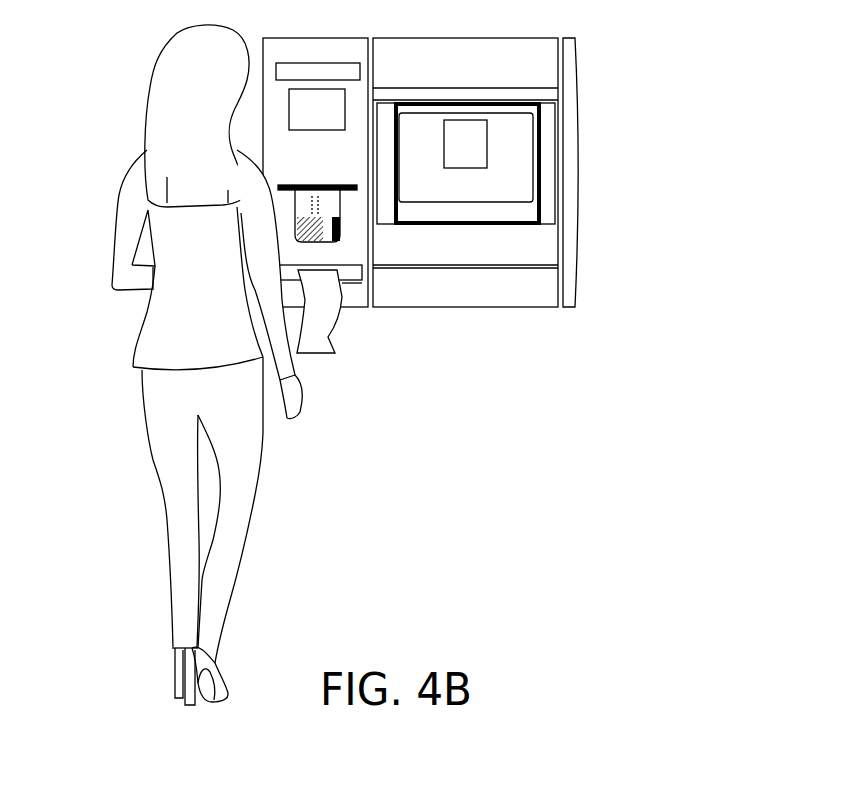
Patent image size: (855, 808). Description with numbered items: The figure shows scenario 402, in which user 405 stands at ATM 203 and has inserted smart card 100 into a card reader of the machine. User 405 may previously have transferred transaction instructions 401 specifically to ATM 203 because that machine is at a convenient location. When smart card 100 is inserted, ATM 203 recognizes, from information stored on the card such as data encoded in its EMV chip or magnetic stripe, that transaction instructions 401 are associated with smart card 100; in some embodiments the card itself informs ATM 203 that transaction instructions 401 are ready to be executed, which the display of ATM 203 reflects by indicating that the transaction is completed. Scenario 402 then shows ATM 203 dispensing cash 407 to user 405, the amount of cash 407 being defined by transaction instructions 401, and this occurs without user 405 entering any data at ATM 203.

The smart card 100 is at (340, 218).
The ATM 203 is at (577, 182).
The transaction instructions 401 is at (537, 140).
The scenario 402 is at (508, 191).
The user 405 is at (112, 222).
The cash 407 is at (335, 340).